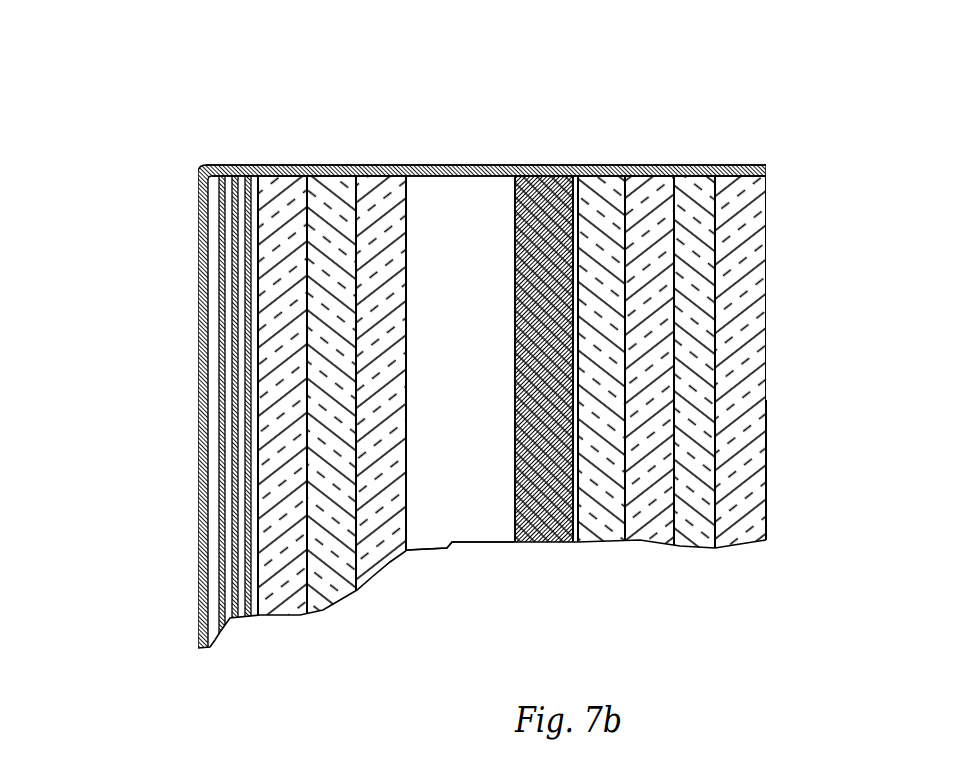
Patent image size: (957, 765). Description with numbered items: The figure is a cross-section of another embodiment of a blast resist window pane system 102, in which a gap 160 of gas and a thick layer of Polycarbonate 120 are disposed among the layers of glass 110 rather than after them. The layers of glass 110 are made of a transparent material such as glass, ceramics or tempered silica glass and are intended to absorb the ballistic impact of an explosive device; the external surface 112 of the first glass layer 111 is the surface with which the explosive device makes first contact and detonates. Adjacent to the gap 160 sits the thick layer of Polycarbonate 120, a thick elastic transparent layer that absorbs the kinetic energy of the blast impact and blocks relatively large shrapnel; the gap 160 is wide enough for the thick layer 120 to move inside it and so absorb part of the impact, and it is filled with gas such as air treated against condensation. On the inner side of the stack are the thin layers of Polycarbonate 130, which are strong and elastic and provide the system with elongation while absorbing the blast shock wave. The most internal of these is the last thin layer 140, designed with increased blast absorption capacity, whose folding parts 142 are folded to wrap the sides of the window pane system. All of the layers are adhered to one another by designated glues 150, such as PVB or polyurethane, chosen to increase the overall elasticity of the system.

The blast resist window pane system 102 is at (812, 199).
The layers of glass 110 is at (405, 166).
The first glass layer 111 is at (730, 338).
The external surface 112 is at (766, 457).
The thick layer of Polycarbonate 120 is at (537, 205).
The thin layers of Polycarbonate 130 is at (252, 166).
The last thin layer 140 is at (218, 272).
The folding parts 142 is at (426, 168).
The glues 150 is at (235, 413).
The gap 160 is at (470, 215).